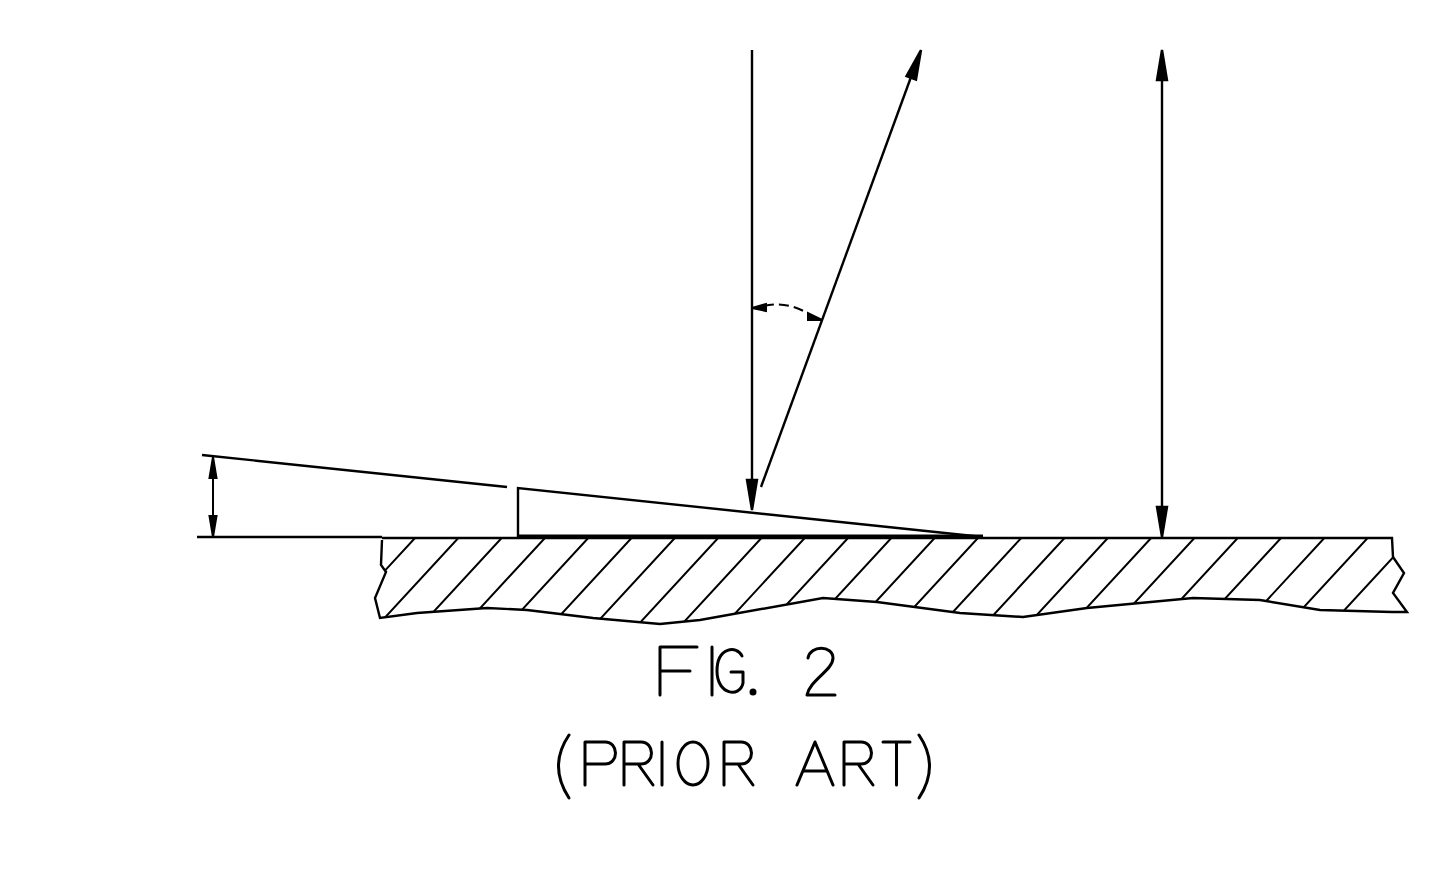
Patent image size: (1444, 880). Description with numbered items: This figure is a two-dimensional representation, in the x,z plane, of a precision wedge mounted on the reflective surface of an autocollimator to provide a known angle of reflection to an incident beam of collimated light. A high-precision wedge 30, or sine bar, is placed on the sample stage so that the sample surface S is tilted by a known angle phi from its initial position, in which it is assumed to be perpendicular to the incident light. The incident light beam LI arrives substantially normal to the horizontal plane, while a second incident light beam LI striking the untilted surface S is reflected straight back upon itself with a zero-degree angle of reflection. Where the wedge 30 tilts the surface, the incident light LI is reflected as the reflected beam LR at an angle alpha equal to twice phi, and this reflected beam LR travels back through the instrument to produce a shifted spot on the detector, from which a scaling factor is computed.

The sample surface S is at (1345, 537).
The high-precision wedge 30 is at (602, 520).
The incident light beam LI is at (752, 185).
The reflected beam LR is at (905, 103).